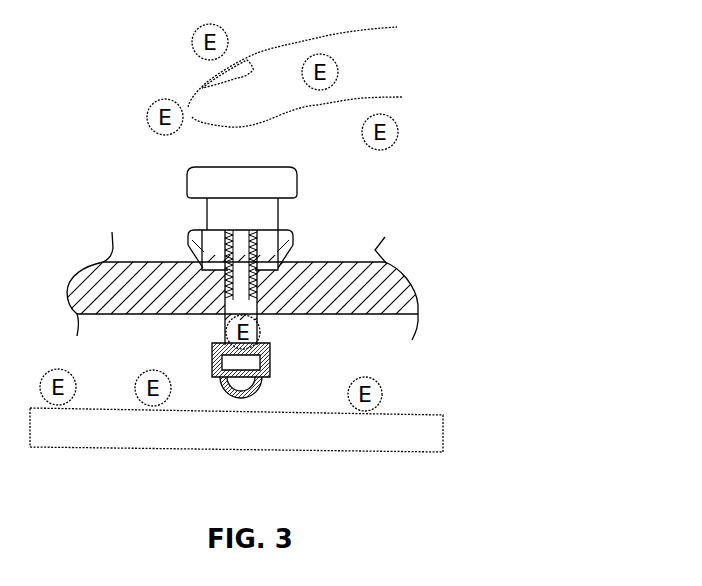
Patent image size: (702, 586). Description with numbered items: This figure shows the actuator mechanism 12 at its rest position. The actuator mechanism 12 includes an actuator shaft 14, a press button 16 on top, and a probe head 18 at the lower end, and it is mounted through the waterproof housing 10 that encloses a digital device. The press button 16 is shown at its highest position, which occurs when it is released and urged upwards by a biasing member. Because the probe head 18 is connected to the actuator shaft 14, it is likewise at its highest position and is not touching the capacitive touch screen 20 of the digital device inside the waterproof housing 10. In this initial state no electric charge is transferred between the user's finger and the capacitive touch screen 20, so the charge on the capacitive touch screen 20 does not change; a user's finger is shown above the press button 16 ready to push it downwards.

The waterproof housing 10 is at (385, 289).
The actuator mechanism 12 is at (314, 274).
The actuator shaft 14 is at (242, 296).
The press button 16 is at (299, 187).
The probe head 18 is at (273, 360).
The capacitive touch screen 20 is at (396, 414).